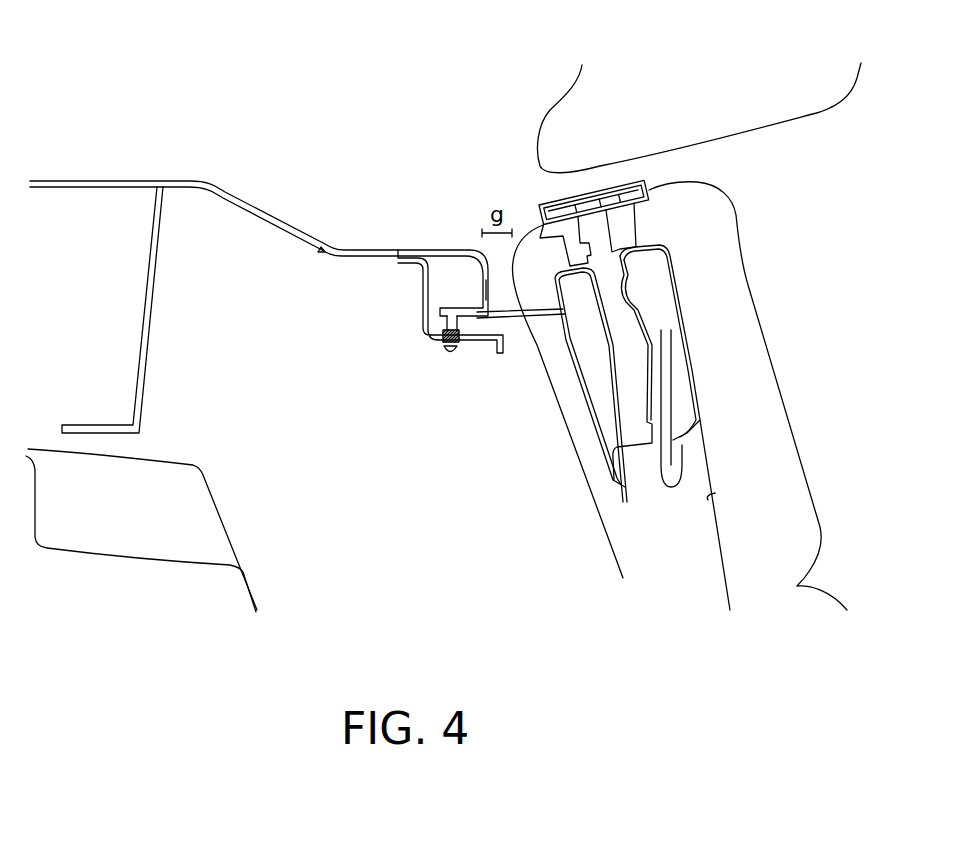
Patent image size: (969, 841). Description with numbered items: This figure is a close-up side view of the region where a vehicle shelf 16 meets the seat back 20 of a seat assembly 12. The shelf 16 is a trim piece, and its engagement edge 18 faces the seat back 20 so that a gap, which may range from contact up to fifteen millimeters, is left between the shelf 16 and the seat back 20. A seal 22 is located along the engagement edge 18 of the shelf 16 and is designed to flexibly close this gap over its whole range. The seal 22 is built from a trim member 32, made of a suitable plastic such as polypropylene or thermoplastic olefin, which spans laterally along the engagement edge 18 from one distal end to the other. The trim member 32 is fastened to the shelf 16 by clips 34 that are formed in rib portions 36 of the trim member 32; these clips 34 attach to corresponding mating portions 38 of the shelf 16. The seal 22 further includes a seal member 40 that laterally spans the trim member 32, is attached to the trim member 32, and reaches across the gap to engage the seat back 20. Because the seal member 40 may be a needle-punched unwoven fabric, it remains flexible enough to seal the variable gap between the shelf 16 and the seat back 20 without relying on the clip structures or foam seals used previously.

The seat assembly 12 is at (822, 530).
The shelf 16 is at (83, 179).
The engagement edge 18 is at (397, 250).
The seat back 20 is at (733, 358).
The seal 22 is at (472, 249).
The trim member 32 is at (430, 249).
The clips 34 is at (450, 357).
The rib portions 36 is at (467, 319).
The mating portions 38 is at (418, 333).
The seal member 40 is at (520, 318).